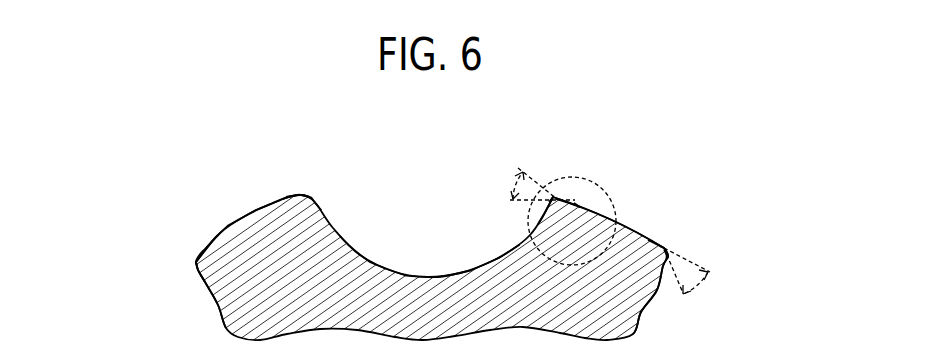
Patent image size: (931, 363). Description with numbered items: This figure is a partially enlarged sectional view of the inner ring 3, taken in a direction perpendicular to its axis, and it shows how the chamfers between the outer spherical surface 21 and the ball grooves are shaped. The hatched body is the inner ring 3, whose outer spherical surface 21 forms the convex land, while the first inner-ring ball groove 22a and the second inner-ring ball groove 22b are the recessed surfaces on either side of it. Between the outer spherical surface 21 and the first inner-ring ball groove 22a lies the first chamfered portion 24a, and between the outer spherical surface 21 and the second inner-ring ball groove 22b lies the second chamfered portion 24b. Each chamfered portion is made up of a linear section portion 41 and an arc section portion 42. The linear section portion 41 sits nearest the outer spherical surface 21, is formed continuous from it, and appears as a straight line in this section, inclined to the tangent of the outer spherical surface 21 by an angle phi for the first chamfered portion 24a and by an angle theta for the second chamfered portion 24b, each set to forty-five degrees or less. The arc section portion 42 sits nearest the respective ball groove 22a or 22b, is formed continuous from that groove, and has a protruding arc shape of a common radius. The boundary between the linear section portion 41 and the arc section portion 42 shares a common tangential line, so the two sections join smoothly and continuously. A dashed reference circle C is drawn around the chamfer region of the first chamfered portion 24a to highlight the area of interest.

The inner ring 3 is at (687, 169).
The outer spherical surface 21 is at (245, 215).
The first inner-ring ball groove 22a is at (433, 277).
The second inner-ring ball groove 22b is at (223, 313).
The first chamfered portion 24a is at (340, 136).
The second chamfered portion 24b is at (153, 207).
The linear section portion 41 is at (295, 197).
The arc section portion 42 is at (310, 197).
The reference circle C is at (601, 188).